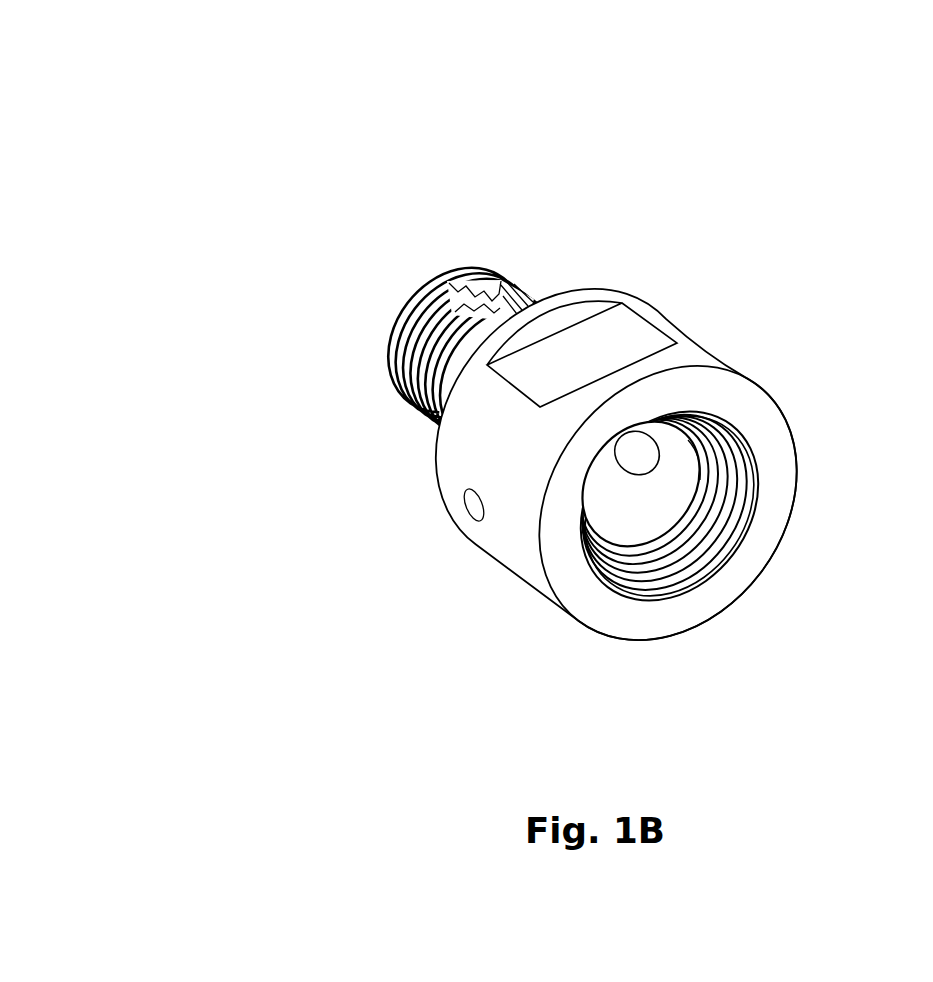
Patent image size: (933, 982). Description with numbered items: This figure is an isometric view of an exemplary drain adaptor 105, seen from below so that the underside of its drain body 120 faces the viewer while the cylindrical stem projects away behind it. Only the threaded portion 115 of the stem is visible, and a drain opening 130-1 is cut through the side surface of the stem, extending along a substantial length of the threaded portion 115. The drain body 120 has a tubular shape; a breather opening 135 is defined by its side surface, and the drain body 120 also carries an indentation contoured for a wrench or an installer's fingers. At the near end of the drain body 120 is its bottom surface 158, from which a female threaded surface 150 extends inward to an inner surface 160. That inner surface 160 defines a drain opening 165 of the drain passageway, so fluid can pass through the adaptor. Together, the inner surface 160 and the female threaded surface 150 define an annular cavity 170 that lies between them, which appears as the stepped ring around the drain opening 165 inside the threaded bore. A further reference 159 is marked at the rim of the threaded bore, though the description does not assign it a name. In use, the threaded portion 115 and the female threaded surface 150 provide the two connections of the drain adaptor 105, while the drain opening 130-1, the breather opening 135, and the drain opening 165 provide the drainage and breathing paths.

The drain adaptor 105 is at (168, 84).
The threaded portion 115 is at (444, 422).
The drain body 120 is at (634, 262).
The drain opening 130-1 is at (485, 285).
The breather opening 135 is at (466, 514).
The female threaded surface 150 is at (665, 573).
The bottom surface 158 is at (786, 510).
The bore rim 159 is at (608, 594).
The inner surface 160 is at (614, 517).
The drain opening 165 is at (638, 460).
The annular cavity 170 is at (695, 490).